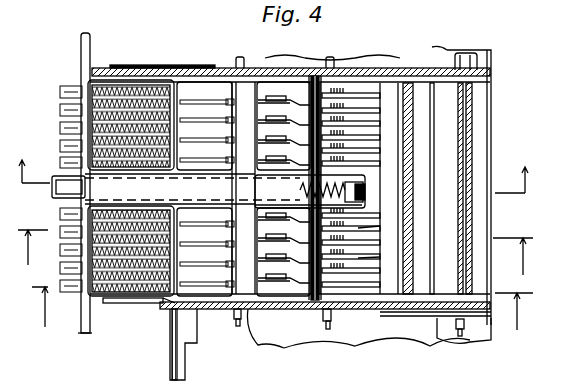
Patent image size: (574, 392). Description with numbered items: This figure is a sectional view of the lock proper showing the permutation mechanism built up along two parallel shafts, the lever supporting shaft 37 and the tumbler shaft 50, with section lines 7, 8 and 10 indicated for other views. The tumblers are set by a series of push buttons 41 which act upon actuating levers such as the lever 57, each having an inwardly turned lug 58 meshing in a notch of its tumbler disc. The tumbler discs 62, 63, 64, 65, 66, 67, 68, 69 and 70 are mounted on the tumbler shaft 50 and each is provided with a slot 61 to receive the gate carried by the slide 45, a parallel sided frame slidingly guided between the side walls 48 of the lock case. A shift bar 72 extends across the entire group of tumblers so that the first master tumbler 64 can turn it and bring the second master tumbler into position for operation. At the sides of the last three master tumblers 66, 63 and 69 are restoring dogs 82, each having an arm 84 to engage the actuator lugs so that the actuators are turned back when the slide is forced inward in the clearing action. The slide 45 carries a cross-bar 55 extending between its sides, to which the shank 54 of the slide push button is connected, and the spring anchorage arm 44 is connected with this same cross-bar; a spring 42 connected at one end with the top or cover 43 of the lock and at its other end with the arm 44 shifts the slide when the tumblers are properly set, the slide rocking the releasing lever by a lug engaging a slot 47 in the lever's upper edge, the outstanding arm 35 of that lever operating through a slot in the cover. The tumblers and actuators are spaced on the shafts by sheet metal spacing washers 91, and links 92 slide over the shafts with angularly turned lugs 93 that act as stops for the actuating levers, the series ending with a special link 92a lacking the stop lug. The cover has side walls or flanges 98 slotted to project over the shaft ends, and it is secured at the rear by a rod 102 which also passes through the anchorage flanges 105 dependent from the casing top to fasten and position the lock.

The section line 7- 7 is at (282, 319).
The section line 8- 8 is at (276, 261).
The section line 10- 10 is at (279, 165).
The outstanding arm 35 is at (180, 346).
The lever supporting shaft 37 is at (238, 326).
The push buttons 41 is at (58, 115).
The spring 42 is at (300, 190).
The top or cover 43 is at (188, 60).
The arm 44 is at (307, 191).
The slide 45 is at (380, 72).
The slot 47 is at (265, 330).
The side walls 48 is at (398, 76).
The tumbler shaft 50 is at (327, 330).
The shank 54 is at (176, 189).
The cross-bar 55 is at (243, 188).
The lever 57 is at (262, 163).
The inwardly turned lug 58 is at (262, 260).
The slot 61 is at (378, 283).
The tumbler disc 62 is at (360, 258).
The tumbler disc 63 is at (378, 242).
The tumbler disc 64 is at (360, 226).
The tumbler disc 65 is at (384, 206).
The tumbler disc 66 is at (372, 172).
The tumbler disc 67 is at (368, 153).
The tumbler disc 68 is at (358, 134).
The tumbler disc 69 is at (376, 114).
The tumbler disc 70 is at (376, 97).
The shift bar 72 is at (314, 125).
The restoring dogs 82 is at (388, 228).
The arm 84 is at (262, 234).
The spacing washers 91 is at (384, 262).
The links 92 is at (292, 128).
The special link 92a is at (285, 90).
The angularly turned lugs 93 is at (220, 100).
The side walls or flanges 98 is at (319, 95).
The rod 102 is at (462, 332).
The anchorage flanges 105 is at (447, 68).